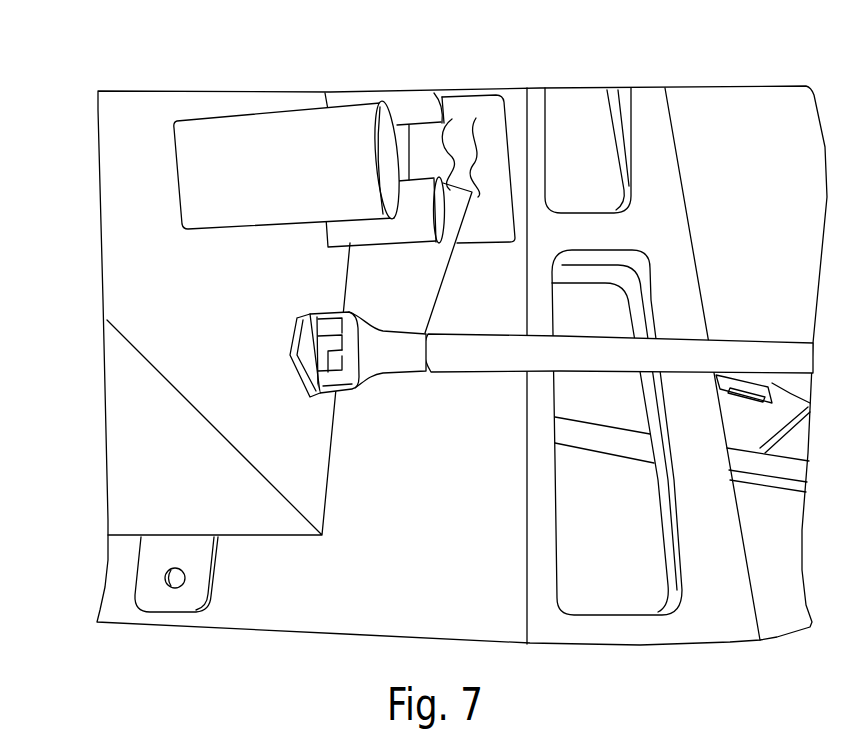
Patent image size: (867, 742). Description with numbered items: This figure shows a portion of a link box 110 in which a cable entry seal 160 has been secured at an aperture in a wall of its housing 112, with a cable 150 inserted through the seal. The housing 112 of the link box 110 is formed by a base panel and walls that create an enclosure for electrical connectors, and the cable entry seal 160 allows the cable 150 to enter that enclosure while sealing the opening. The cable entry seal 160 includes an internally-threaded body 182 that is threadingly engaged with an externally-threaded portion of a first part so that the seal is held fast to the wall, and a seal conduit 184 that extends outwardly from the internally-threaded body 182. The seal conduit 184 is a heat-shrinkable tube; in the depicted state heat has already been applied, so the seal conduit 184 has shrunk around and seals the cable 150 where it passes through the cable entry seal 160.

The link box 110 is at (130, 103).
The housing 112 is at (119, 438).
The cable 150 is at (683, 337).
The cable entry seal 160 is at (312, 324).
The internally-threaded body 182 is at (348, 309).
The seal conduit 184 is at (396, 329).